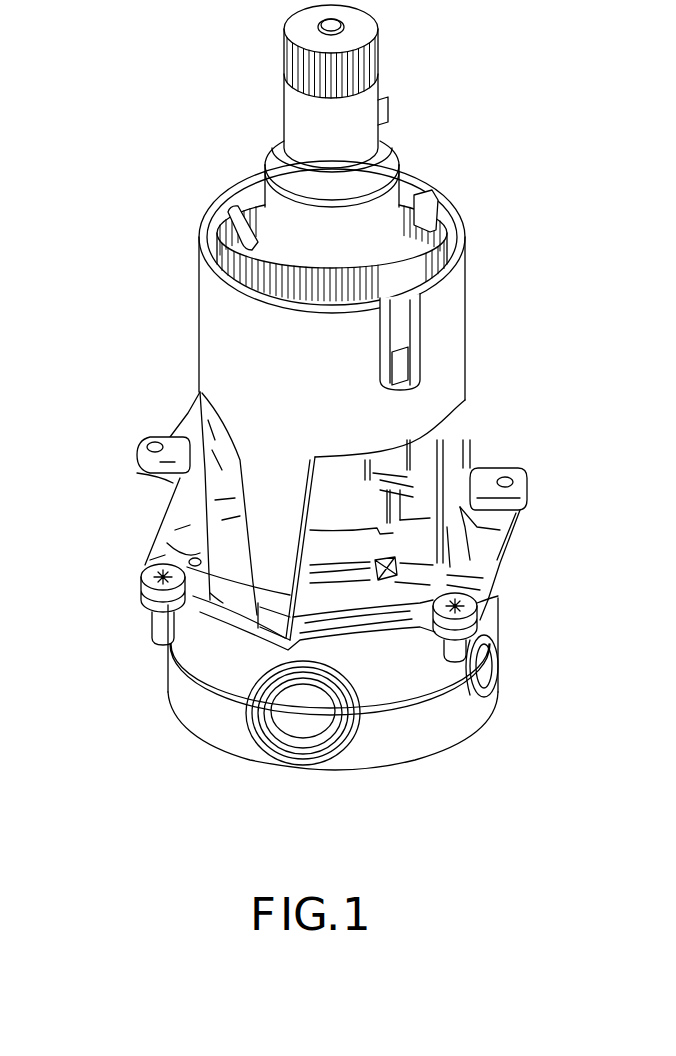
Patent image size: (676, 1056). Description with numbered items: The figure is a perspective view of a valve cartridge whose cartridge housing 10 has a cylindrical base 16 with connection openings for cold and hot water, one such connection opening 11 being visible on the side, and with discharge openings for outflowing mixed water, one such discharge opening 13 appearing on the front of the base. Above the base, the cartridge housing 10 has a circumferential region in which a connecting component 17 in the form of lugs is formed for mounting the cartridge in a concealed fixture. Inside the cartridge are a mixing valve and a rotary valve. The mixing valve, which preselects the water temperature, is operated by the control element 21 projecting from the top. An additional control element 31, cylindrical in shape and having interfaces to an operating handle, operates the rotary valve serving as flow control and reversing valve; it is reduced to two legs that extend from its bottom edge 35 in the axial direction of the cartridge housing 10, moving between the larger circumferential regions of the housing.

The cartridge housing 10 is at (180, 498).
The connection opening 11 is at (484, 656).
The discharge opening 13 is at (303, 718).
The cylindrical base 16 is at (175, 706).
The connecting component 17 is at (137, 458).
The control element 21 is at (380, 52).
The control element 31 is at (467, 305).
The bottom edge 35 is at (447, 447).